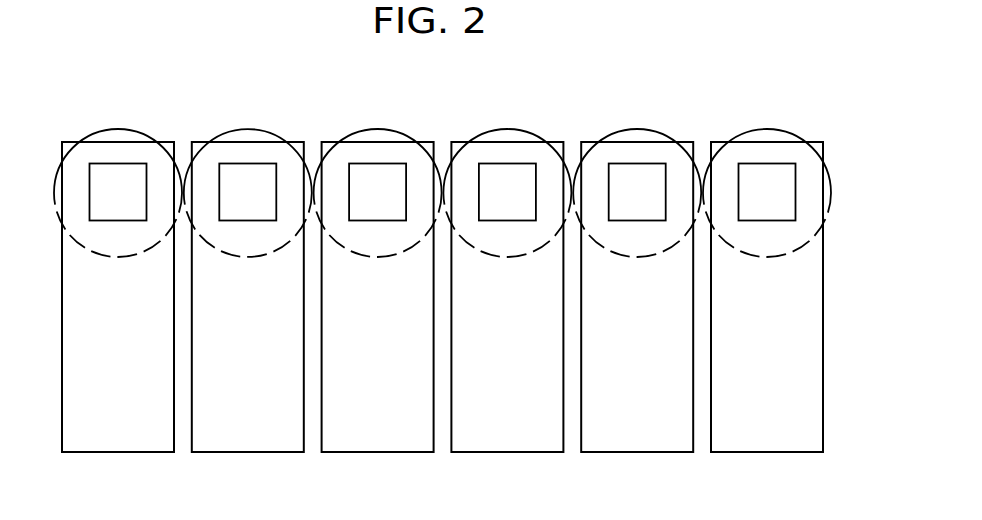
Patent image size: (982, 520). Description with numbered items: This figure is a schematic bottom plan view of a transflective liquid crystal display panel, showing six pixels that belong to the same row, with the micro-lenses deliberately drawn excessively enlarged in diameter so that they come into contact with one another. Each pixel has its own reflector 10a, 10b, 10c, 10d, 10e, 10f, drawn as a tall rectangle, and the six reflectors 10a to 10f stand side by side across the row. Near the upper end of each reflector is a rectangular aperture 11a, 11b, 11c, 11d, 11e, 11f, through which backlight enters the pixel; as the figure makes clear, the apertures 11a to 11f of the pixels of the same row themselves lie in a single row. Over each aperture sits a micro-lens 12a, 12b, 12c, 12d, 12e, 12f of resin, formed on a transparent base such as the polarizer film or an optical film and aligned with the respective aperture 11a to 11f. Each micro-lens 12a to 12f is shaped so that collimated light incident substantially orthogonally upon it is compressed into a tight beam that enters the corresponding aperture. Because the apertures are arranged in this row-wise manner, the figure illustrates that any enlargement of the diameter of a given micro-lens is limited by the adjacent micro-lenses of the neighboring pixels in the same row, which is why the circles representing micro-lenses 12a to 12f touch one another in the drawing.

The reflector 10a is at (128, 435).
The reflector 10b is at (258, 435).
The reflector 10c is at (388, 435).
The reflector 10d is at (517, 435).
The reflector 10e is at (647, 435).
The reflector 10f is at (777, 435).
The rectangular aperture 11a is at (137, 205).
The rectangular aperture 11b is at (267, 205).
The rectangular aperture 11c is at (397, 205).
The rectangular aperture 11d is at (526, 205).
The rectangular aperture 11e is at (656, 205).
The rectangular aperture 11f is at (786, 205).
The micro-lens 12a is at (122, 128).
The micro-lens 12b is at (252, 128).
The micro-lens 12c is at (382, 128).
The micro-lens 12d is at (511, 128).
The micro-lens 12e is at (641, 128).
The micro-lens 12f is at (771, 128).